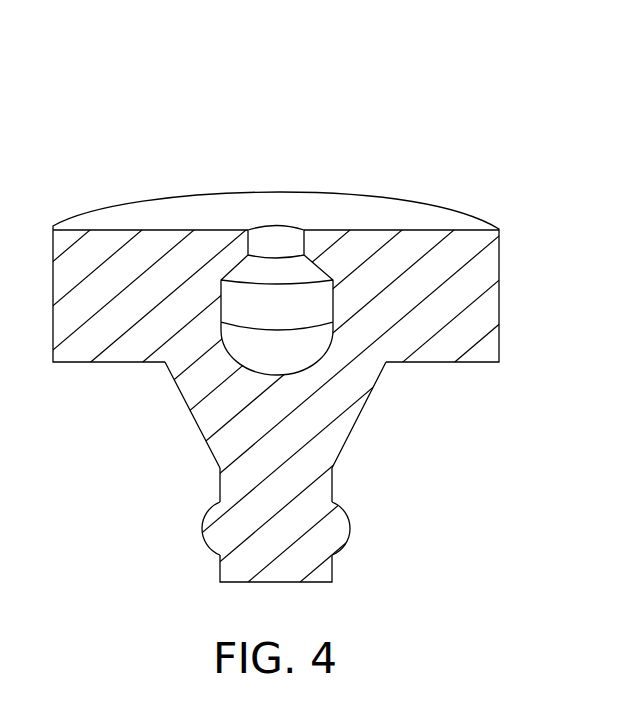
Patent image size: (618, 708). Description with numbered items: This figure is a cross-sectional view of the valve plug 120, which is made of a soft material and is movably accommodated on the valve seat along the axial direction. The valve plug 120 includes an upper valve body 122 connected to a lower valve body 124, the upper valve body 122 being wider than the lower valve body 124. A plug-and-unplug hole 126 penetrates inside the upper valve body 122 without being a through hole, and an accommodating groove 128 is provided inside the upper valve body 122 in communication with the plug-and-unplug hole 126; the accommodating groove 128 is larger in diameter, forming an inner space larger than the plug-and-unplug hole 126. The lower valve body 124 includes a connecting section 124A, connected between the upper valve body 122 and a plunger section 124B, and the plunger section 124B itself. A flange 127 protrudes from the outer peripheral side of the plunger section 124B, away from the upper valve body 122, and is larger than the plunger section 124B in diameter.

The valve plug 120 is at (309, 322).
The upper valve body 122 is at (488, 300).
The lower valve body 124 is at (285, 472).
The connecting section 124A is at (198, 407).
The plunger section 124B is at (220, 488).
The plug-and-unplug hole 126 is at (270, 228).
The flange 127 is at (348, 525).
The accommodating groove 128 is at (313, 303).